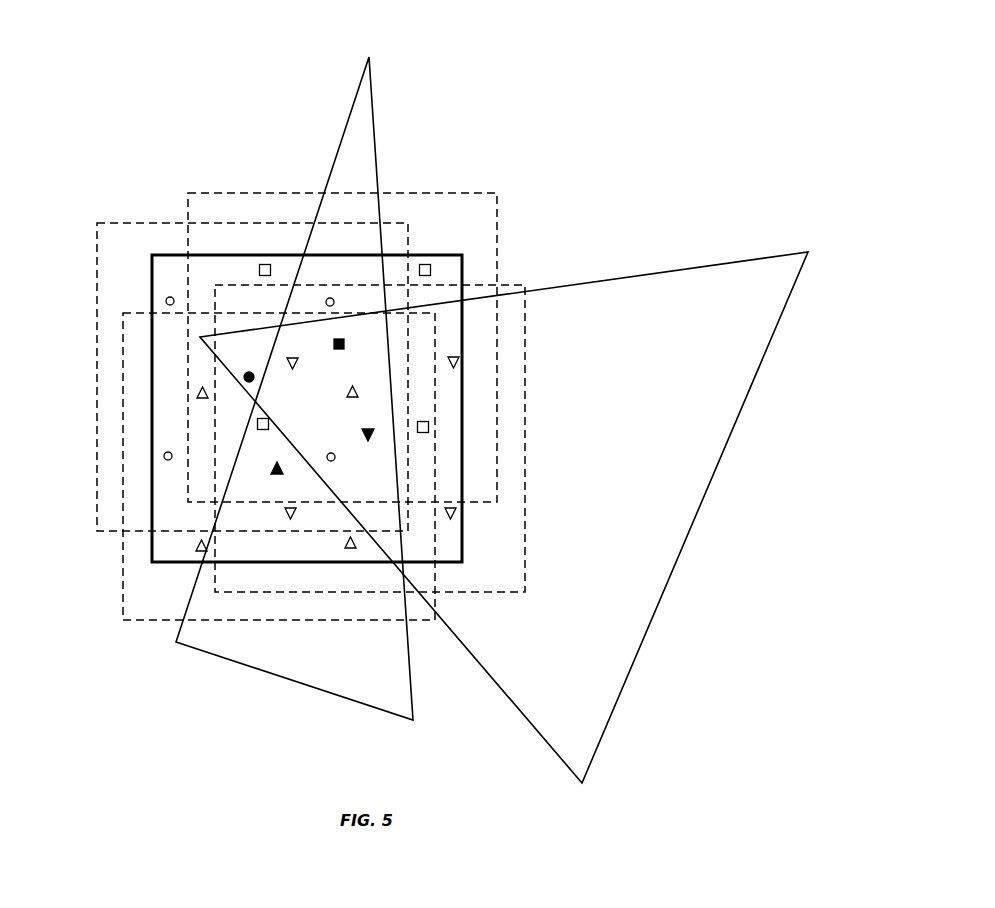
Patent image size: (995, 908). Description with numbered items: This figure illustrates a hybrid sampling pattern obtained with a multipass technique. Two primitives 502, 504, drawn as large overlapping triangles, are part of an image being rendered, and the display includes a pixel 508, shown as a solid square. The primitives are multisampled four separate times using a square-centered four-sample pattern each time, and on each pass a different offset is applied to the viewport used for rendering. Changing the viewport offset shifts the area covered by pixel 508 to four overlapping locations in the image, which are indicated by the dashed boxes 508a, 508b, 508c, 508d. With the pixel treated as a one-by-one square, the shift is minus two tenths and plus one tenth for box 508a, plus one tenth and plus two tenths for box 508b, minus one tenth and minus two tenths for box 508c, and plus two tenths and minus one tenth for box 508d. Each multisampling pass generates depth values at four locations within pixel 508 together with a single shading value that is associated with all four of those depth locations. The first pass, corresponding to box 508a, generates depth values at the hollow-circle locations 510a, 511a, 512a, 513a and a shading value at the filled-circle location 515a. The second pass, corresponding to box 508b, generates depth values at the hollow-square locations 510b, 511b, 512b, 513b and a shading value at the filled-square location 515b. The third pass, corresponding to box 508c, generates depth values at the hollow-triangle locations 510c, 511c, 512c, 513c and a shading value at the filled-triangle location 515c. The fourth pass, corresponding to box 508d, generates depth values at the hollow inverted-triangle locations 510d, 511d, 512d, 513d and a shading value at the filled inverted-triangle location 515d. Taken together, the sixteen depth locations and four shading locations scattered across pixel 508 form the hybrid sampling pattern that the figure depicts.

The primitive 502 is at (692, 277).
The primitive 504 is at (370, 695).
The pixel 508 is at (456, 272).
The box 508a is at (118, 233).
The box 508b is at (472, 198).
The box 508c is at (139, 613).
The box 508d is at (518, 567).
The depth value location 510a is at (166, 301).
The depth value location 510b is at (264, 264).
The depth value location 510c is at (197, 392).
The depth value location 510d is at (290, 371).
The depth value location 511a is at (330, 298).
The depth value location 511b is at (428, 264).
The depth value location 511c is at (354, 389).
The depth value location 511d is at (460, 361).
The depth value location 512a is at (163, 456).
The depth value location 512b is at (269, 424).
The depth value location 512c is at (196, 546).
The depth value location 512d is at (291, 520).
The depth value location 513a is at (334, 460).
The depth value location 513b is at (430, 427).
The depth value location 513c is at (351, 549).
The depth value location 513d is at (457, 516).
The shading value location 515a is at (246, 372).
The shading value location 515b is at (339, 339).
The shading value location 515c is at (278, 475).
The shading value location 515d is at (362, 436).